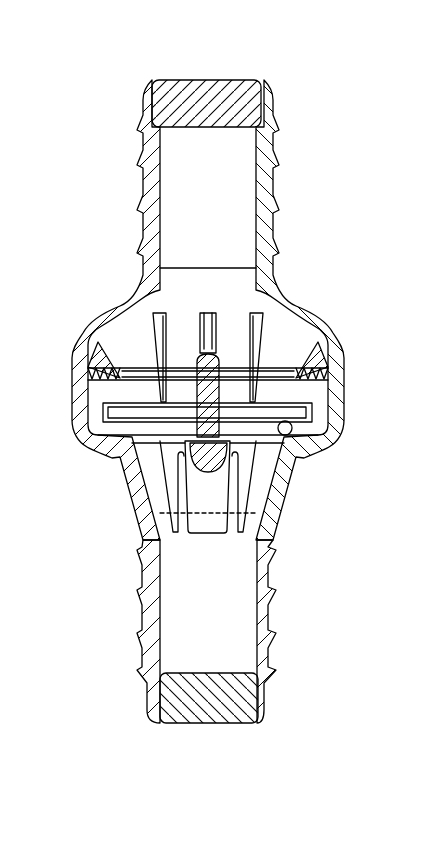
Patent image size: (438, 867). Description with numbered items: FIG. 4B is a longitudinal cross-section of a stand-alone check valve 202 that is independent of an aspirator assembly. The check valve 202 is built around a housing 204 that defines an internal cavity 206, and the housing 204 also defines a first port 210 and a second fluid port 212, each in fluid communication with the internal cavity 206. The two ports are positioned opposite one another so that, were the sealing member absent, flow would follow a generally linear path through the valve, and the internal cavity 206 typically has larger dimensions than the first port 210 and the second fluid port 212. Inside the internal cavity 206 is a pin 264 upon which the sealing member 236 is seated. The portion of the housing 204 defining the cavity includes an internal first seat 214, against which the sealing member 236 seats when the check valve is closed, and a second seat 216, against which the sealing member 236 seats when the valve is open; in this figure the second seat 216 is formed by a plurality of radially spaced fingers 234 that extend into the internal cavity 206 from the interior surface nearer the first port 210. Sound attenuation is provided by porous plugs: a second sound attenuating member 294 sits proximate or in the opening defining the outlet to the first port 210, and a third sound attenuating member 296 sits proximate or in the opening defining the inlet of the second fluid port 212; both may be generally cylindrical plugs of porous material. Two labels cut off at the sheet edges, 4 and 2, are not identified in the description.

The check valve 202 is at (290, 223).
The housing 204 is at (344, 372).
The internal cavity 206 is at (321, 397).
The first port 210 is at (259, 155).
The second fluid port 212 is at (249, 646).
The internal first seat 214 is at (288, 441).
The second seat 216 is at (120, 411).
The radially spaced fingers 234 is at (120, 347).
The sealing member 236 is at (284, 428).
The pin 264 is at (257, 335).
The second sound attenuating member 294 is at (217, 92).
The third sound attenuating member 296 is at (258, 722).
The partial numeral (clipped at left edge) 4 is at (150, 357).
The partial numeral (clipped at right edge) 2 is at (343, 393).